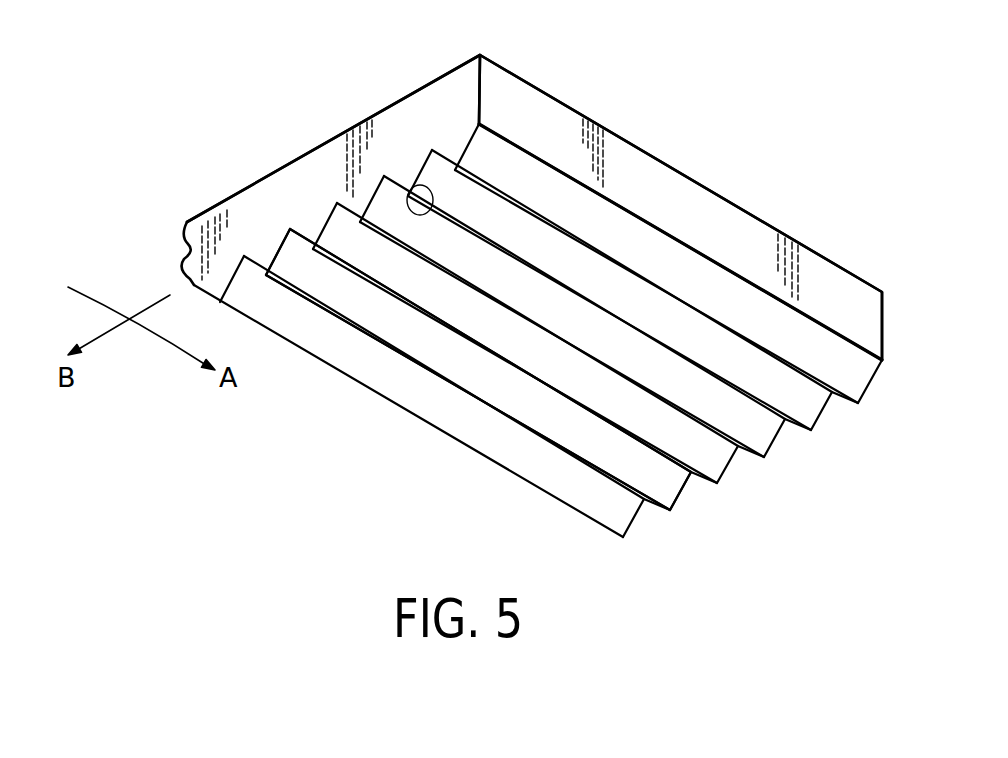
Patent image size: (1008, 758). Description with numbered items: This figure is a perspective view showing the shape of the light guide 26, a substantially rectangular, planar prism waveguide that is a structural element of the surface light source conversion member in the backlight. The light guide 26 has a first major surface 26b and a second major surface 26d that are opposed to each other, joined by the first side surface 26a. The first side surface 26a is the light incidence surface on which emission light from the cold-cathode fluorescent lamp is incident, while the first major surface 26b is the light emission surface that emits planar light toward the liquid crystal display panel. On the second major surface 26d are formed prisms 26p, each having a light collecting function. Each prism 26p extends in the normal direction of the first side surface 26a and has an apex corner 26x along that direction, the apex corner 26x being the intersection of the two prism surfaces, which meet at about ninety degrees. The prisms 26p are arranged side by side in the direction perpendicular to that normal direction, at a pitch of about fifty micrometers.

The light guide 26 is at (660, 128).
The first side surface 26a is at (285, 184).
The first major surface 26b is at (504, 72).
The second major surface 26d is at (322, 294).
The prism 26p is at (803, 428).
The apex corner 26x is at (424, 186).